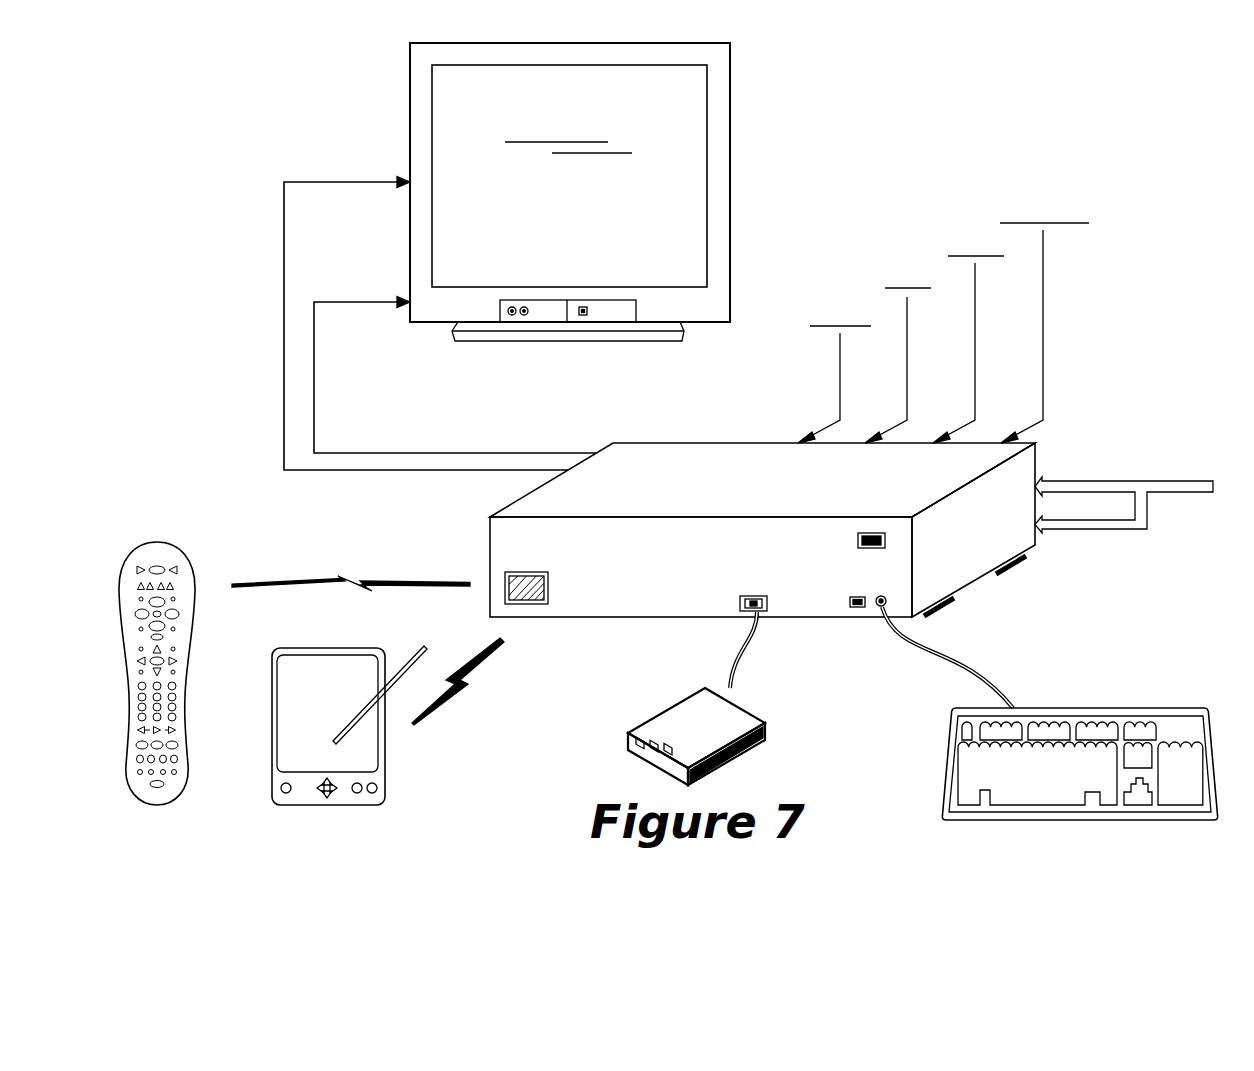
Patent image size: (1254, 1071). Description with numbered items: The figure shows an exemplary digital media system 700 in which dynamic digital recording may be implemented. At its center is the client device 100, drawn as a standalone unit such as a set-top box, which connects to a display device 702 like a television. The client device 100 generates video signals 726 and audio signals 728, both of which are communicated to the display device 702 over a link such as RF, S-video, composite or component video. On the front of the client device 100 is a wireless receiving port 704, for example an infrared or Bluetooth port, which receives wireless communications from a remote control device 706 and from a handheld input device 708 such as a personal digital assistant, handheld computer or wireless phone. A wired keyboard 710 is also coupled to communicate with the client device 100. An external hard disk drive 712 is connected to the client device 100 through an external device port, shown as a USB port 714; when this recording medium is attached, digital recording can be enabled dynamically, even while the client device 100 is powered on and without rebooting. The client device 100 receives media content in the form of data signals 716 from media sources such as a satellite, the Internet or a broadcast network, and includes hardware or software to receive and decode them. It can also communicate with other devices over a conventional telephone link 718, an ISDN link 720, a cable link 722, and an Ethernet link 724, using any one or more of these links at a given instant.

The digital media system 700 is at (1138, 106).
The display device 702 is at (730, 190).
The client device 100 is at (675, 443).
The wireless receiving port 704 is at (538, 572).
The remote control device 706 is at (158, 541).
The handheld input device 708 is at (385, 752).
The wired keyboard 710 is at (1125, 708).
The external hard disk drive 712 is at (742, 727).
The USB port 714 is at (753, 596).
The data signals 716 is at (1103, 530).
The telephone link 718 is at (840, 287).
The ISDN link 720 is at (907, 247).
The cable link 722 is at (975, 218).
The Ethernet link 724 is at (1043, 185).
The video signal 726 is at (371, 213).
The audio signal 728 is at (371, 333).